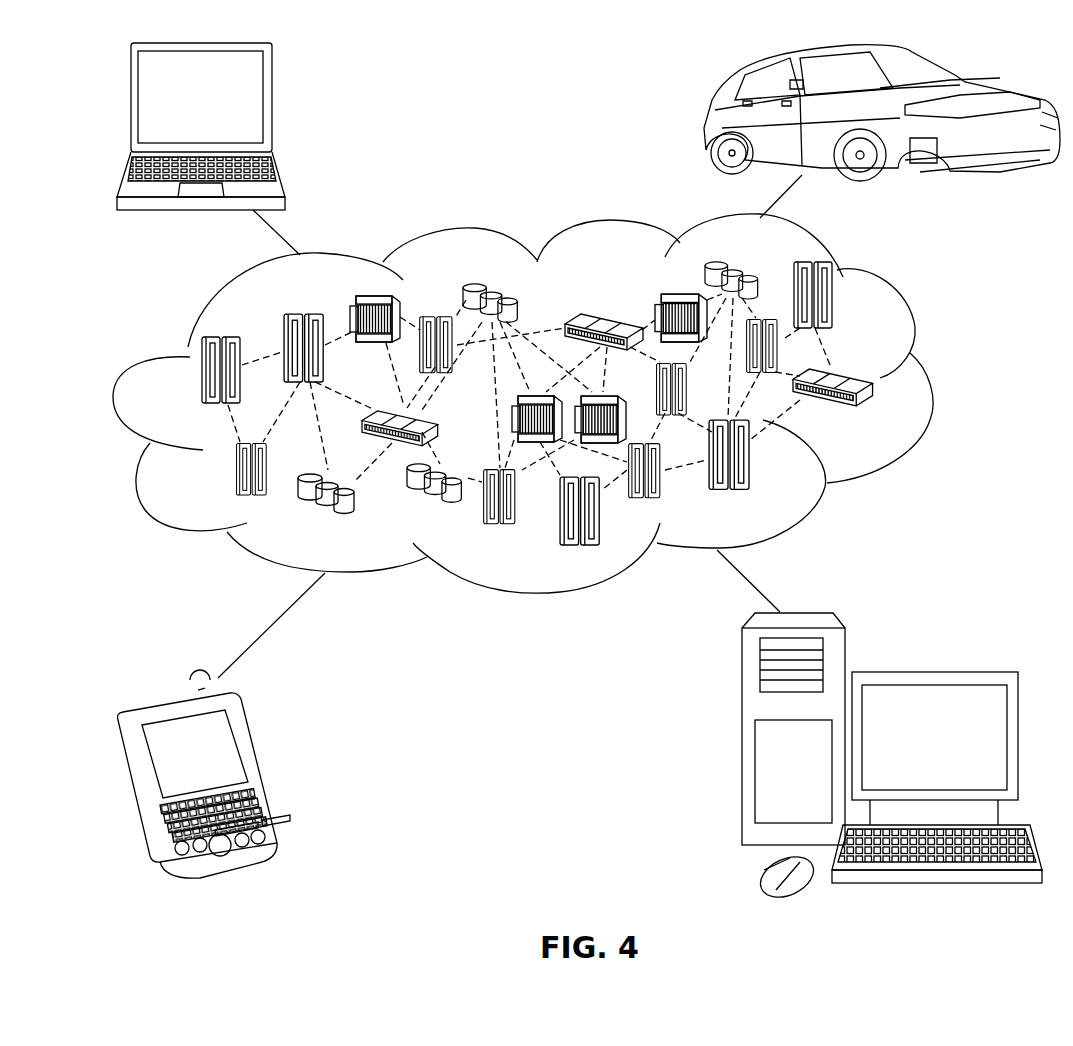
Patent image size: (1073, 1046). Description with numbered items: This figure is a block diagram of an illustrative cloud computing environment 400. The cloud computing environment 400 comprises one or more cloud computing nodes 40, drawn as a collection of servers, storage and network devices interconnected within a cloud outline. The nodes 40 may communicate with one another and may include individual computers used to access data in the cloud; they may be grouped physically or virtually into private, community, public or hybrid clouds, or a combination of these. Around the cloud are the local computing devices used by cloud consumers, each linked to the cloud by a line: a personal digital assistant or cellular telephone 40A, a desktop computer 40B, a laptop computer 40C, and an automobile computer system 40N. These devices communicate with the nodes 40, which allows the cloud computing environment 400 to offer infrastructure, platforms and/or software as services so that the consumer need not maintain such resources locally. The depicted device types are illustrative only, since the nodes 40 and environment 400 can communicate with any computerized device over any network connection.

The cloud computing nodes 40 is at (873, 409).
The cloud computing environment 400 is at (932, 382).
The personal digital assistant or cellular telephone 40A is at (268, 772).
The desktop computer 40B is at (935, 670).
The laptop computer 40C is at (272, 105).
The automobile computer system 40N is at (713, 122).